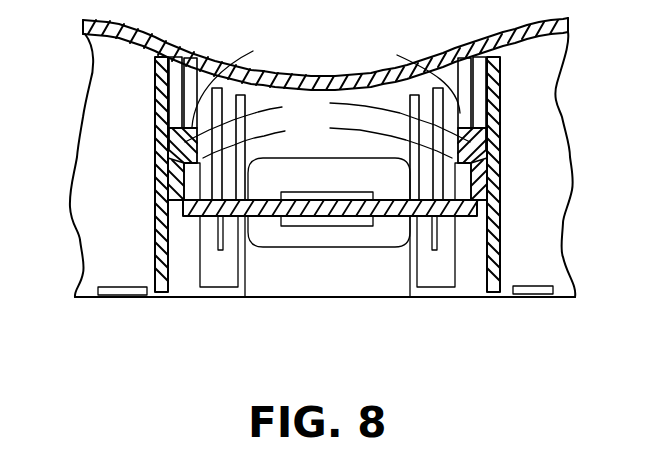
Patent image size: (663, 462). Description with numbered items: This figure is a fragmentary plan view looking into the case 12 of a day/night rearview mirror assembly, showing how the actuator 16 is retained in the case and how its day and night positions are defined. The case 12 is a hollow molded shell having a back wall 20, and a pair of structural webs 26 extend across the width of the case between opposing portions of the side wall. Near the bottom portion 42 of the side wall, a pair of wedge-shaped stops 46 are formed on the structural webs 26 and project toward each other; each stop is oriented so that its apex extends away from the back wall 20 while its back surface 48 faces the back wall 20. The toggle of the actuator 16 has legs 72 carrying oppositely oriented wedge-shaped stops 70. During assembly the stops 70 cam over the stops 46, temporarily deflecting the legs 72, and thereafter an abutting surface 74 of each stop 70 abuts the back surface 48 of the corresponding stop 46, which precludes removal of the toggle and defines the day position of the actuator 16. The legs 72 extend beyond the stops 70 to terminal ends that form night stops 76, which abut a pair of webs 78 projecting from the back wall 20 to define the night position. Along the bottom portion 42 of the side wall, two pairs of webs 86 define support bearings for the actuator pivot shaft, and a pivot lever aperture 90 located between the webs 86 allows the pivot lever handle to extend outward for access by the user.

The case 12 is at (583, 189).
The actuator 16 is at (394, 222).
The back wall 20 is at (352, 74).
The structural webs 26 is at (157, 70).
The bottom portion of side wall 42 is at (102, 158).
The wedge-shaped stops 46 is at (163, 192).
The back surface 48 is at (157, 182).
The stops 70 is at (327, 122).
The legs 72 is at (327, 212).
The abutting surface 74 is at (157, 128).
The night stops 76 is at (326, 77).
The webs 78 is at (200, 78).
The webs 86 is at (243, 247).
The pivot lever aperture 90 is at (279, 227).